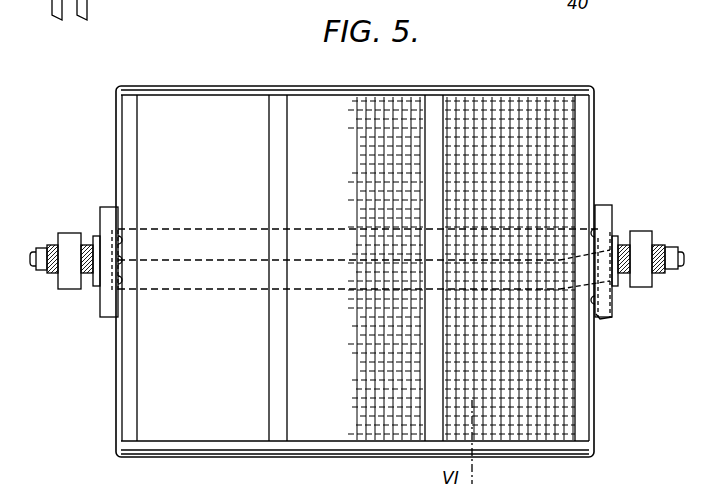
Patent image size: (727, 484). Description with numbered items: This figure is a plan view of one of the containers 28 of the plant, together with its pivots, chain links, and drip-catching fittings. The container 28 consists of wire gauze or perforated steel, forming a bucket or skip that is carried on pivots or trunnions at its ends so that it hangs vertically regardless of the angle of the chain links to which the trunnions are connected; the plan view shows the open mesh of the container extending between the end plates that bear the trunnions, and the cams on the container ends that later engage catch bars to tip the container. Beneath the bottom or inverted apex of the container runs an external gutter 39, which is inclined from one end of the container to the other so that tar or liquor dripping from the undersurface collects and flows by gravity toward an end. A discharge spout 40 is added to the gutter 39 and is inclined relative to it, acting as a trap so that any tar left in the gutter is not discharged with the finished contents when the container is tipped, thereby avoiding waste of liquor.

The container 28 is at (476, 110).
The external gutter 39 is at (217, 229).
The discharge spout 40 is at (606, 316).